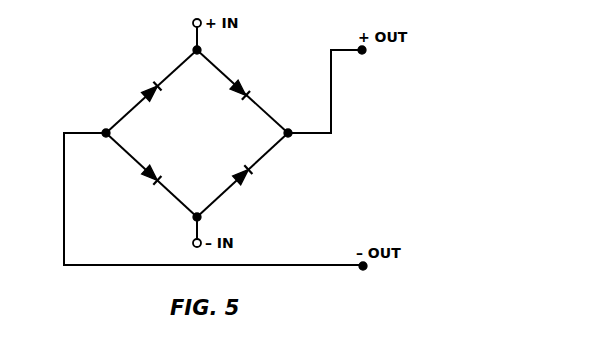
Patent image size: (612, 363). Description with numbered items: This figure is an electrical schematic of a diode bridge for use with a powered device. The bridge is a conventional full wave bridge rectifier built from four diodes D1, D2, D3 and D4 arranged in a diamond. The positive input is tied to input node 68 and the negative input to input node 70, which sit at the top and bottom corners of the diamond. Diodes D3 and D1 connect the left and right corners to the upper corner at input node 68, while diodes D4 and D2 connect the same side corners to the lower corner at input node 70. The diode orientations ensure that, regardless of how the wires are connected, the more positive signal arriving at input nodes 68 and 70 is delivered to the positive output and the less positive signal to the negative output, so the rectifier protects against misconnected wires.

The input node 68 is at (193, 22).
The input node 70 is at (193, 242).
The diode D1 is at (250, 86).
The diode D2 is at (253, 182).
The diode D3 is at (141, 86).
The diode D4 is at (144, 182).